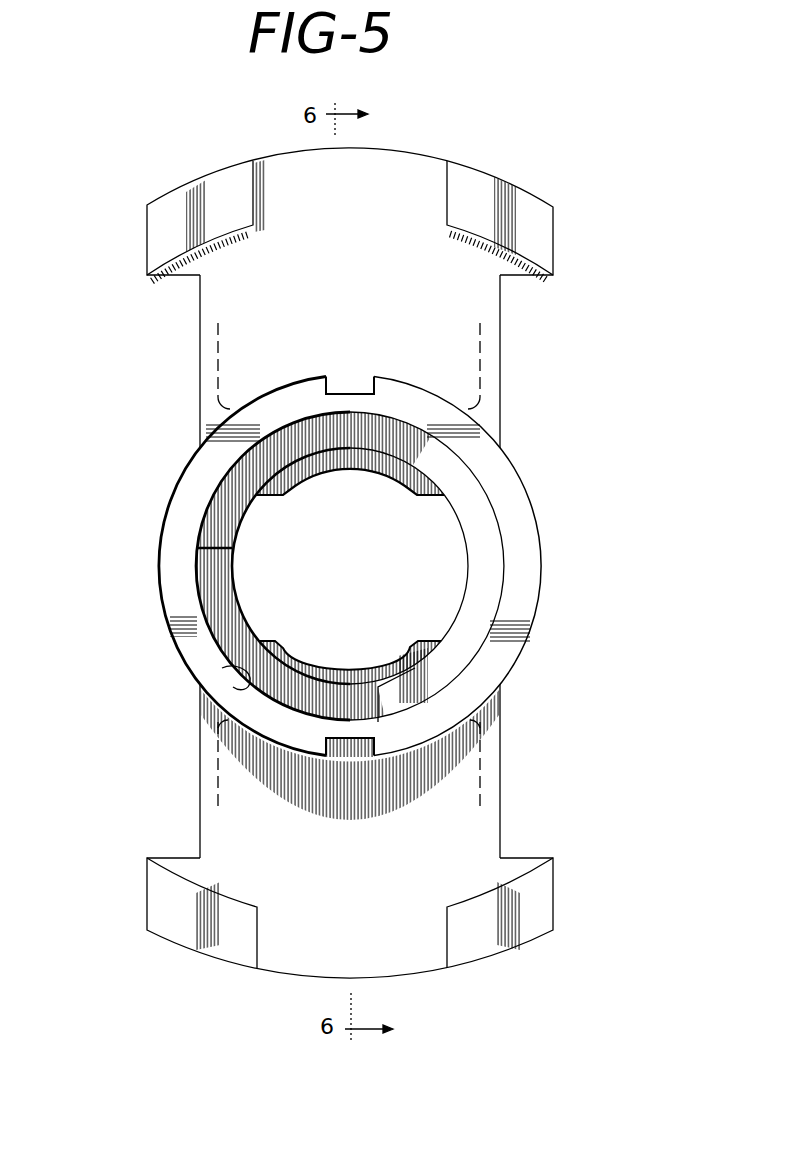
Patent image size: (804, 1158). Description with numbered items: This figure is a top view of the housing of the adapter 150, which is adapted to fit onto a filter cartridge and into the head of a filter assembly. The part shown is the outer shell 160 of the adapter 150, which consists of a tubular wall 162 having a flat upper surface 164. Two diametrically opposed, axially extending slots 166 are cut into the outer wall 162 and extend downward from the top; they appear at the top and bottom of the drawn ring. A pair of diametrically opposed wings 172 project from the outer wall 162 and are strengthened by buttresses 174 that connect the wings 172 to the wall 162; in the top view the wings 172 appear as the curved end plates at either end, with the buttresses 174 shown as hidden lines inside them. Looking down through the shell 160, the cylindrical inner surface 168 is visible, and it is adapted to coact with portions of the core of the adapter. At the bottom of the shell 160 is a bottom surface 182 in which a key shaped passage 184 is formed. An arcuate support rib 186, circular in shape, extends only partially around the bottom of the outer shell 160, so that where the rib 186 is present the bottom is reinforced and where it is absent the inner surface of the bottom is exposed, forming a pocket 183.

The adapter 150 is at (628, 280).
The outer shell 160 is at (541, 557).
The tubular wall 162 is at (163, 610).
The flat upper surface 164 is at (503, 470).
The axially extending slots 166 is at (370, 390).
The cylindrical inner surface 168 is at (222, 668).
The wings 172 is at (458, 300).
The buttresses 174 is at (197, 370).
The bottom surface 182 is at (308, 670).
The pocket 183 is at (275, 647).
The key shaped passage 184 is at (407, 643).
The arcuate support rib 186 is at (483, 602).